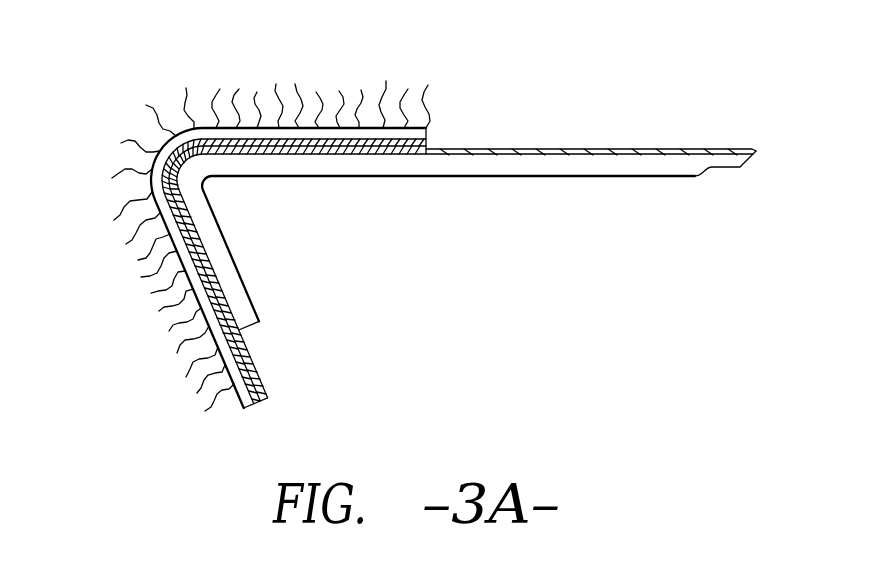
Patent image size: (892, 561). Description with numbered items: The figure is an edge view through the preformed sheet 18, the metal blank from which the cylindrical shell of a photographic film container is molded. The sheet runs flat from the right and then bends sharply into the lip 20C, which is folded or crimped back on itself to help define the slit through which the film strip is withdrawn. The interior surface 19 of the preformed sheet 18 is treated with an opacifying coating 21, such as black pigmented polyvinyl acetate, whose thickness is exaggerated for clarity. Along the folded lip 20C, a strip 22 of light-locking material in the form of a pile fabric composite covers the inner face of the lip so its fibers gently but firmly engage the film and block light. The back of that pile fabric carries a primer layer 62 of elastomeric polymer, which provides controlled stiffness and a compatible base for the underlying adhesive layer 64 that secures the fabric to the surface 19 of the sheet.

The preformed sheet 18 is at (485, 220).
The surface 19 is at (706, 147).
The lip 20C is at (256, 307).
The opacifying coating 21 is at (591, 150).
The strips of light-locking material 22 is at (152, 102).
The primer layer 62 is at (429, 146).
The adhesive layer 64 is at (437, 151).